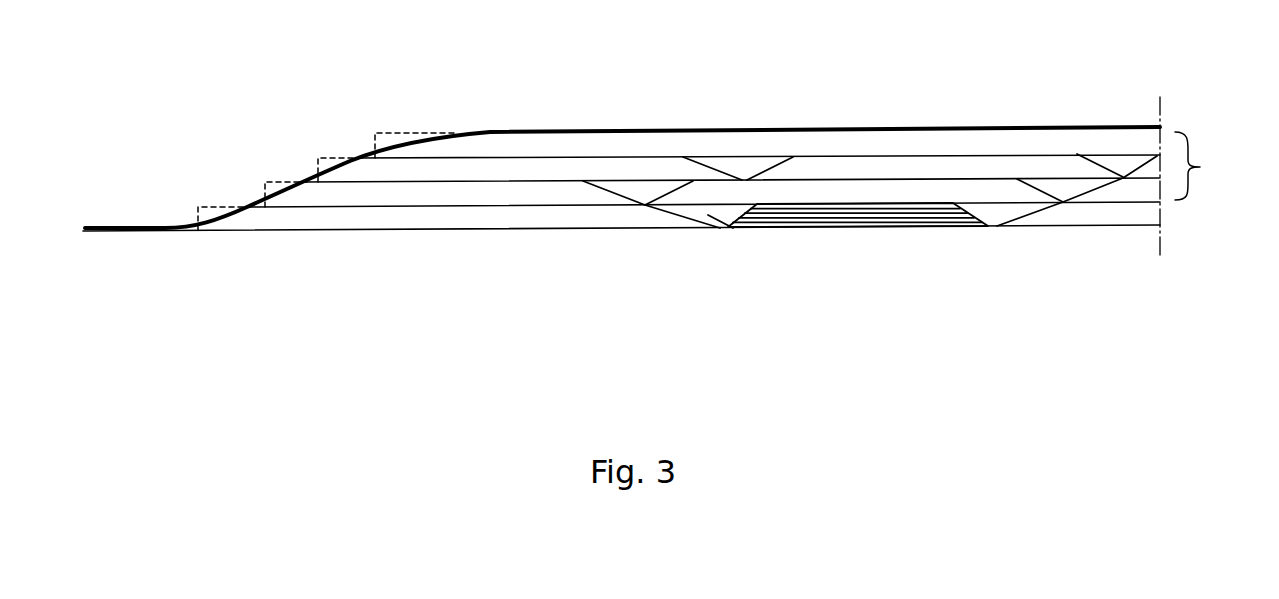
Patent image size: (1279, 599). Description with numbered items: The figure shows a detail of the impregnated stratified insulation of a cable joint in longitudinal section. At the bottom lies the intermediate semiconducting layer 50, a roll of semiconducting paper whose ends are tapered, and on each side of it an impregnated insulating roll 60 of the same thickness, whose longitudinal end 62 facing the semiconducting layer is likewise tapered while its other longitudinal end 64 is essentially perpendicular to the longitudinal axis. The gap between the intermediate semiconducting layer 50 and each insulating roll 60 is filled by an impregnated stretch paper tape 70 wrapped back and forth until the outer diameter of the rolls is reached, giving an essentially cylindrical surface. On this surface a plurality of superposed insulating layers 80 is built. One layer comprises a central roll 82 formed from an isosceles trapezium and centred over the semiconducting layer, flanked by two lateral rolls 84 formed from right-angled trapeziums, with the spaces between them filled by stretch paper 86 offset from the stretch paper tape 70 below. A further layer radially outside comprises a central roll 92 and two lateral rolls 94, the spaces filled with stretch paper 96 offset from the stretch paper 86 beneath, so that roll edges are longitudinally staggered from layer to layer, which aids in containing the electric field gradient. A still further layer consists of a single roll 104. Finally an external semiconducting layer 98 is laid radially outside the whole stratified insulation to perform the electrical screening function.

The intermediate semiconducting layer 50 is at (843, 214).
The impregnated insulating roll 60 is at (475, 215).
The longitudinal end of insulating roll 62 is at (675, 220).
The other longitudinal end of insulating roll 64 is at (200, 220).
The impregnated stretch paper tape 70 is at (727, 227).
The plurality of superposed insulating layers 80 is at (1209, 166).
The central roll 82 is at (803, 192).
The lateral roll 84 is at (535, 198).
The stretch paper 86 is at (627, 188).
The central roll 92 is at (988, 168).
The lateral roll 94 is at (468, 172).
The stretch paper 96 is at (738, 167).
The external semiconducting layer 98 is at (697, 130).
The single roll 104 is at (898, 140).